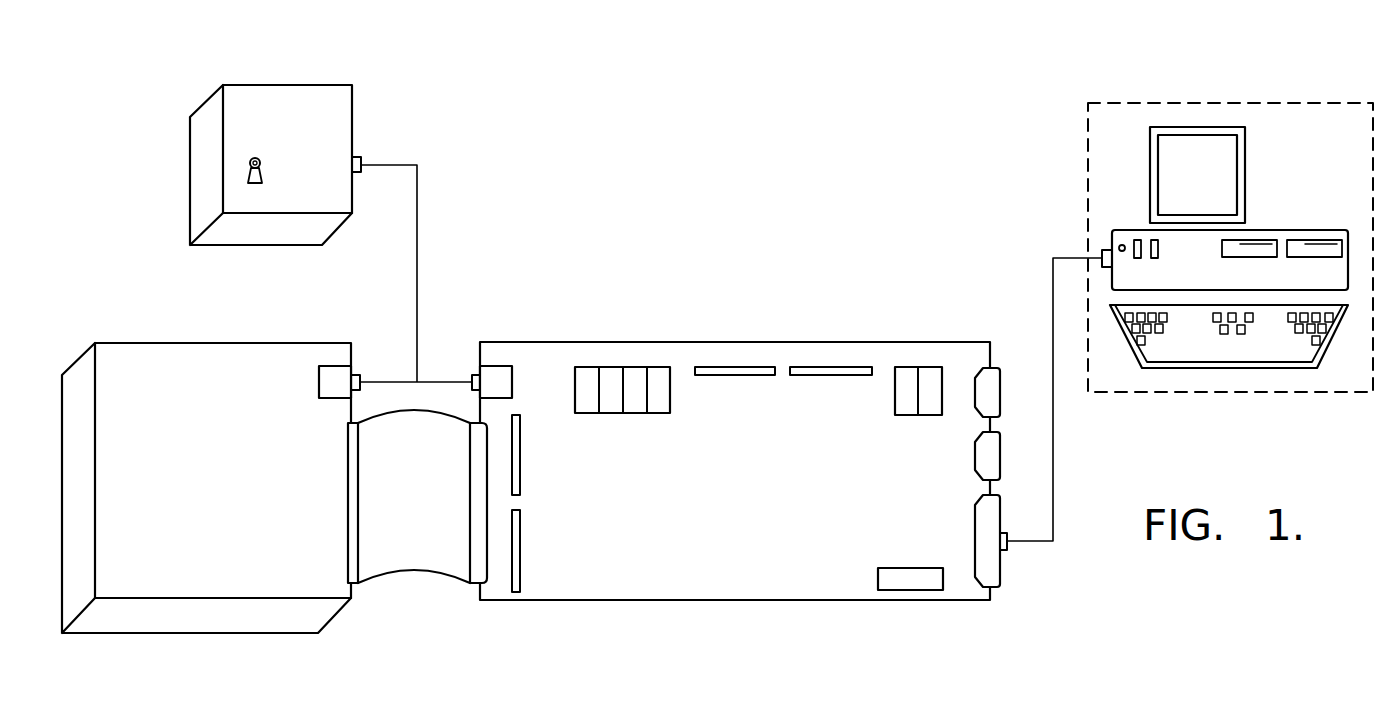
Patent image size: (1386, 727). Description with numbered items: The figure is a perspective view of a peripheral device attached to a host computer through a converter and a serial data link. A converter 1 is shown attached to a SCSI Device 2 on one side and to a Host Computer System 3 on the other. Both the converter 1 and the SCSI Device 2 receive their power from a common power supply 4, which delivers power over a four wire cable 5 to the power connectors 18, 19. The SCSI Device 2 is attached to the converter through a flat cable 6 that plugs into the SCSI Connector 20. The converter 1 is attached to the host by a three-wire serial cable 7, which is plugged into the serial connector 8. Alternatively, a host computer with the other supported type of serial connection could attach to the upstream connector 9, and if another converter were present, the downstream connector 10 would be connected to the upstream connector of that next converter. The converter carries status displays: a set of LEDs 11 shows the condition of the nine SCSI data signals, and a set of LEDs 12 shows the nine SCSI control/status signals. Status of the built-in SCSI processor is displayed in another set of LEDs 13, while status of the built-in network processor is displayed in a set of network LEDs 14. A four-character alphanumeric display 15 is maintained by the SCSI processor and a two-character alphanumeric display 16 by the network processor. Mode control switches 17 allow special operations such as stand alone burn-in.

The converter 1 is at (768, 601).
The SCSI Device 2 is at (178, 637).
The Host Computer System 3 is at (1210, 100).
The power supply 4 is at (288, 78).
The 4 wire cable 5 is at (418, 254).
The flat cable 6 is at (410, 545).
The 3-wire serial cable 7 is at (1056, 439).
The RS-232 connector 8 is at (989, 568).
The upstream RS-422 connector 9 is at (989, 392).
The downstream RS-422 connector 10 is at (984, 453).
The set of LEDs 11 is at (516, 472).
The set of LEDs 12 is at (514, 567).
The set of LEDs 13 is at (732, 370).
The network LEDs 14 is at (834, 372).
The 4-character alphanumeric display 15 is at (633, 413).
The 2-character alphanumeric display 16 is at (918, 366).
The mode control switches 17 is at (910, 583).
The power connector 18 is at (336, 383).
The power connector 19 is at (495, 378).
The SCSI Connector 20 is at (480, 553).